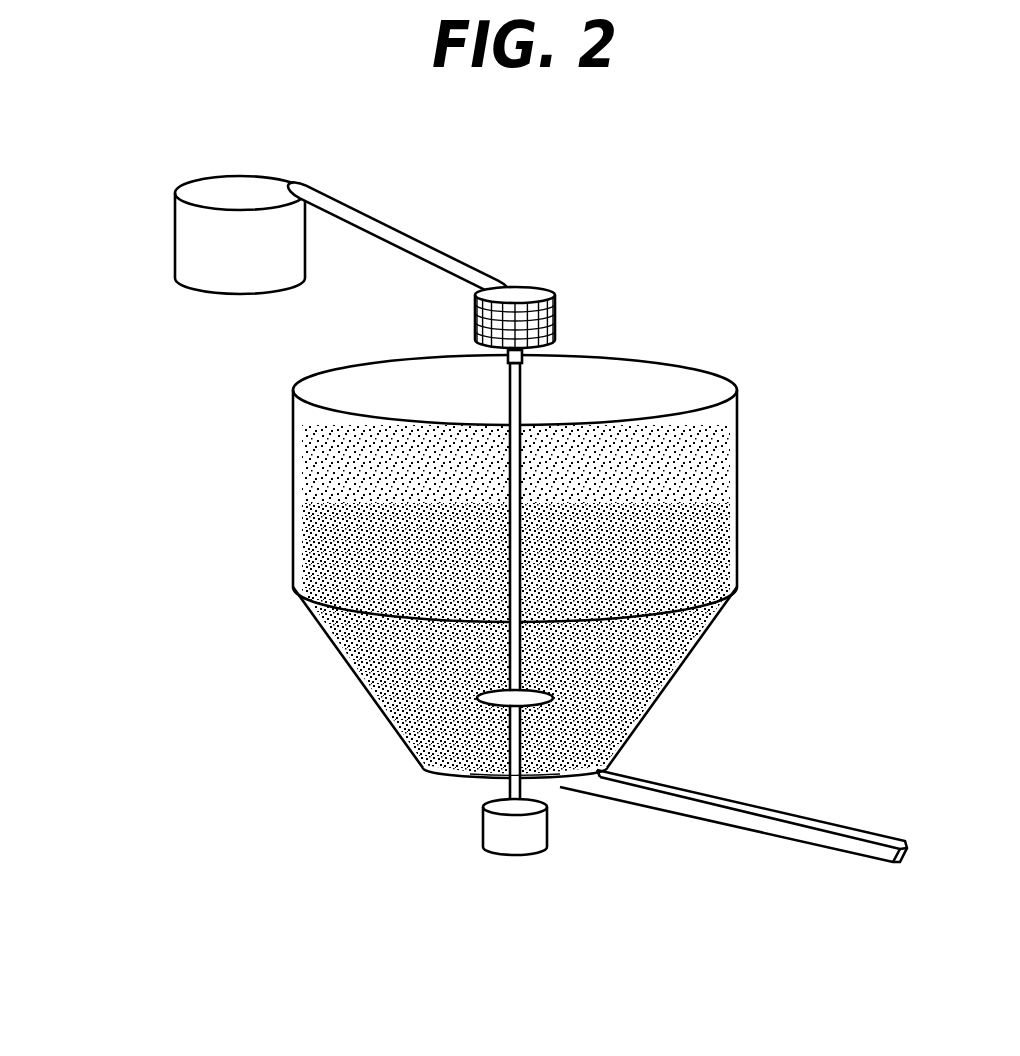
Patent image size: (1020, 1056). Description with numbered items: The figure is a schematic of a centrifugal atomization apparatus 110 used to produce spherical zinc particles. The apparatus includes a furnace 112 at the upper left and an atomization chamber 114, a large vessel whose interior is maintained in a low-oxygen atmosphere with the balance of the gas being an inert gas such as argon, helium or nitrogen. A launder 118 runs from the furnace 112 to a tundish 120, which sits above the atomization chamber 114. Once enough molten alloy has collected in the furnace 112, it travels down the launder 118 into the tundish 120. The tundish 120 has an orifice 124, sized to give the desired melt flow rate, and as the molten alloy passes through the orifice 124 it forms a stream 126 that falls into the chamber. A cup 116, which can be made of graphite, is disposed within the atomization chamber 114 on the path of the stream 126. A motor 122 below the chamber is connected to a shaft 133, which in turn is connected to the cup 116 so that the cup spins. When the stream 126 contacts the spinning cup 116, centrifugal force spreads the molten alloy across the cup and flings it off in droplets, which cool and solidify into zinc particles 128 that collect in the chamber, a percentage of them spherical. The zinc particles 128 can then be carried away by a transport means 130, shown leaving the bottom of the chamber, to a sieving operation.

The centrifugal atomization apparatus 110 is at (148, 145).
The furnace 112 is at (173, 233).
The atomization chamber 114 is at (272, 482).
The cup 116 is at (553, 700).
The launder 118 is at (418, 238).
The tundish 120 is at (555, 313).
The motor 122 is at (482, 827).
The orifice 124 is at (525, 357).
The stream 126 is at (520, 480).
The zinc particles 128 is at (410, 580).
The transport means 130 is at (745, 828).
The shaft 133 is at (493, 780).